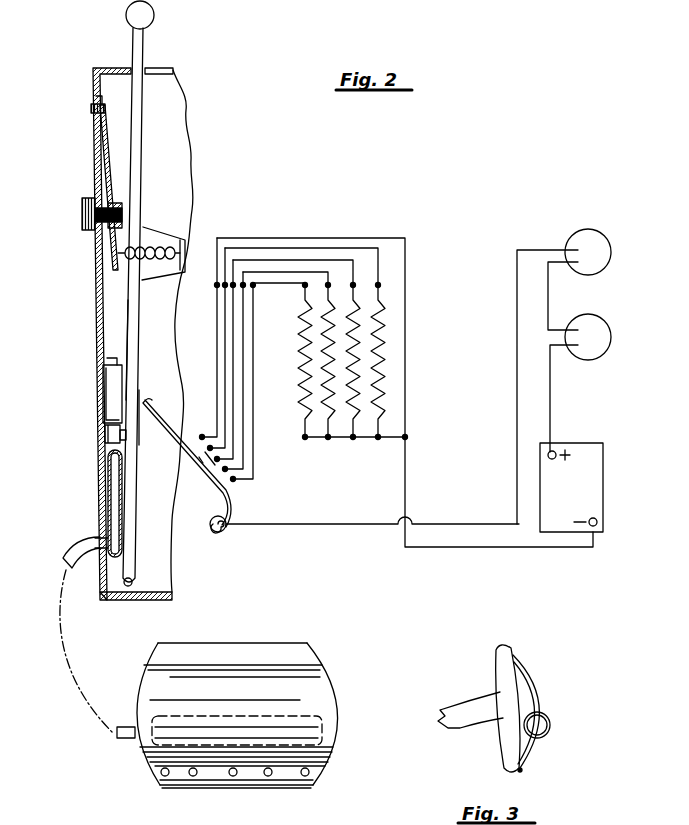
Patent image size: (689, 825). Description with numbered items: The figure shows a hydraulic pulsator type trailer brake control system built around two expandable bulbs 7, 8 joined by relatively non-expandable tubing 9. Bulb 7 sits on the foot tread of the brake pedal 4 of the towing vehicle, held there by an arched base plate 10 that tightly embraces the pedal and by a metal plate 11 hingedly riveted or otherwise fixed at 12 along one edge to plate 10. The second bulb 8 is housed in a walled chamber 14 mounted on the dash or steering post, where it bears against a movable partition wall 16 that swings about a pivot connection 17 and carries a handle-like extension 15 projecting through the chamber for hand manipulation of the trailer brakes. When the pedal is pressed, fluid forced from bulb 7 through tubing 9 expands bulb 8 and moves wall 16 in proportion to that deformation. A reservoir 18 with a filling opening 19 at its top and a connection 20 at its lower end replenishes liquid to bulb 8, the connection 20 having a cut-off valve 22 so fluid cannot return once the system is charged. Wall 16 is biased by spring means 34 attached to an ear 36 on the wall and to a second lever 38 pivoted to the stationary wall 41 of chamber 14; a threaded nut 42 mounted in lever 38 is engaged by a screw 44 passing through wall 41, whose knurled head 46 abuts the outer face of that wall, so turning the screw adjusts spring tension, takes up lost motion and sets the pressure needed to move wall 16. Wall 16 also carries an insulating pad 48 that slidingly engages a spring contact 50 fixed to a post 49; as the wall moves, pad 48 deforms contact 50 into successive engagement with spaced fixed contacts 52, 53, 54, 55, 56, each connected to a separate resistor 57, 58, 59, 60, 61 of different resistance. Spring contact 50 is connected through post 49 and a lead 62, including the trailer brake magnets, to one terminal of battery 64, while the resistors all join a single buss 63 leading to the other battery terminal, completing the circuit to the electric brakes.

In FIG. 3, the brake pedal 4 is at (500, 745).
In FIG. 2, the expandable bulb 7 is at (280, 702).
In FIG. 3, the expandable bulb 7 is at (540, 727).
In FIG. 2, the expandable bulb 8 is at (110, 518).
In FIG. 2, the non-expandable tubing 9 is at (66, 552).
In FIG. 2, the arched base plate 10 is at (236, 652).
In FIG. 3, the arched base plate 10 is at (512, 652).
In FIG. 2, the metal plate 11 is at (320, 684).
In FIG. 3, the metal plate 11 is at (552, 688).
In FIG. 3, the hinge fixing 12 is at (524, 772).
In FIG. 2, the walled chamber 14 is at (96, 310).
In FIG. 2, the handle-like extension 15 is at (140, 96).
In FIG. 2, the movable partition wall 16 is at (134, 337).
In FIG. 2, the pivot connection 17 is at (132, 582).
In FIG. 2, the reservoir 18 is at (103, 393).
In FIG. 2, the filling opening 19 is at (103, 375).
In FIG. 2, the connection 20 is at (105, 428).
In FIG. 2, the cut-off valve 22 is at (108, 440).
In FIG. 2, the spring means 34 is at (184, 240).
In FIG. 2, the ear 36 is at (152, 276).
In FIG. 2, the second lever 38 is at (102, 120).
In FIG. 2, the stationary wall 41 is at (92, 112).
In FIG. 2, the threaded nut 42 is at (125, 207).
In FIG. 2, the screw 44 is at (102, 226).
In FIG. 2, the knurled head 46 is at (85, 199).
In FIG. 2, the insulating pad 48 is at (140, 393).
In FIG. 2, the post 49 is at (224, 532).
In FIG. 2, the spring contact 50 is at (152, 432).
In FIG. 2, the spaced contact 52 is at (236, 480).
In FIG. 2, the spaced contact 53 is at (226, 472).
In FIG. 2, the spaced contact 54 is at (212, 470).
In FIG. 2, the spaced contact 55 is at (210, 462).
In FIG. 2, the spaced contact 56 is at (203, 436).
In FIG. 2, the resistor 57 is at (306, 420).
In FIG. 2, the resistor 58 is at (329, 437).
In FIG. 2, the resistor 59 is at (355, 437).
In FIG. 2, the resistor 60 is at (385, 403).
In FIG. 2, the resistor 61 is at (406, 345).
In FIG. 2, the lead 62 is at (436, 525).
In FIG. 2, the buss 63 is at (405, 436).
In FIG. 2, the battery 64 is at (600, 490).